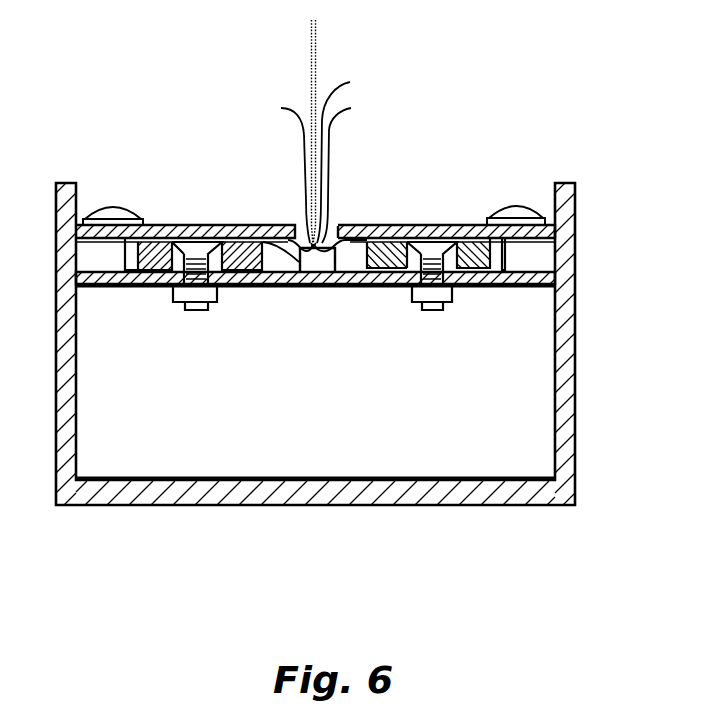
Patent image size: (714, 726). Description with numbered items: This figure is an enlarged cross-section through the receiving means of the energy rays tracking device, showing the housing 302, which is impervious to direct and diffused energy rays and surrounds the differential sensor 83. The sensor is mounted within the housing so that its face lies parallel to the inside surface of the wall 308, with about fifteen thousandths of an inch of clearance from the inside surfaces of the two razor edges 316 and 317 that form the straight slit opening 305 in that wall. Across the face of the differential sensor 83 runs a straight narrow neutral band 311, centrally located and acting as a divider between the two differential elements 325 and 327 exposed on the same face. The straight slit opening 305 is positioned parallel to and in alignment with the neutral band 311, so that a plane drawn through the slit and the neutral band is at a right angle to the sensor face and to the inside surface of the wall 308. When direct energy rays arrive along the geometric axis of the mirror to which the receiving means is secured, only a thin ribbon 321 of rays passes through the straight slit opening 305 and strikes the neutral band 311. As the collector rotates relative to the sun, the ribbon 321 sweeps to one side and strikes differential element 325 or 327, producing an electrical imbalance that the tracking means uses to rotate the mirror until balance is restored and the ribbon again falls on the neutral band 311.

The housing 302 is at (488, 506).
The wall 308 is at (443, 224).
The thin ribbon of energy rays 321 is at (318, 50).
The straight slit opening 305 is at (352, 156).
The razor edge 316 is at (276, 171).
The razor edge 317 is at (355, 171).
The differential element 325 is at (278, 240).
The differential sensor 83 is at (270, 243).
The neutral band 311 is at (339, 232).
The differential element 327 is at (349, 240).